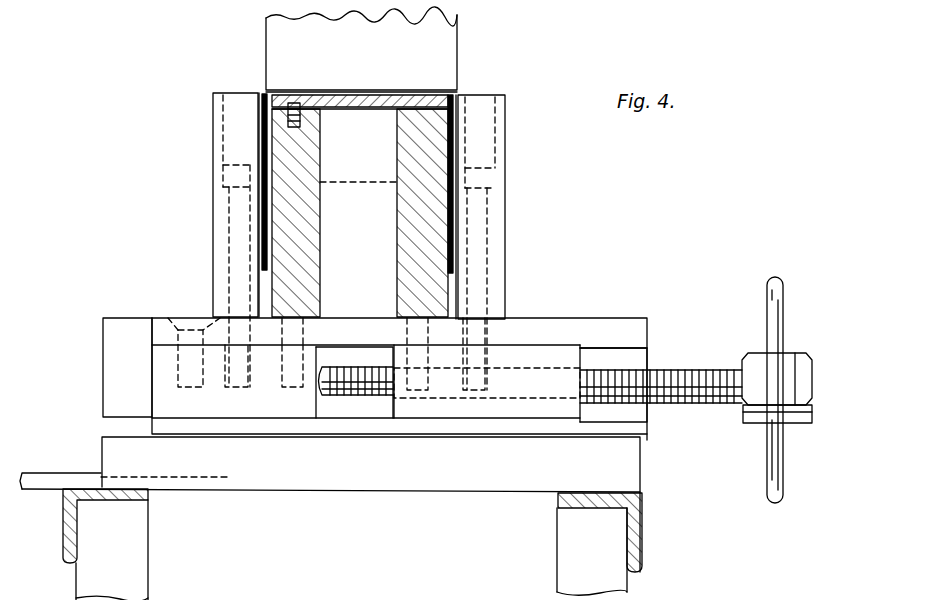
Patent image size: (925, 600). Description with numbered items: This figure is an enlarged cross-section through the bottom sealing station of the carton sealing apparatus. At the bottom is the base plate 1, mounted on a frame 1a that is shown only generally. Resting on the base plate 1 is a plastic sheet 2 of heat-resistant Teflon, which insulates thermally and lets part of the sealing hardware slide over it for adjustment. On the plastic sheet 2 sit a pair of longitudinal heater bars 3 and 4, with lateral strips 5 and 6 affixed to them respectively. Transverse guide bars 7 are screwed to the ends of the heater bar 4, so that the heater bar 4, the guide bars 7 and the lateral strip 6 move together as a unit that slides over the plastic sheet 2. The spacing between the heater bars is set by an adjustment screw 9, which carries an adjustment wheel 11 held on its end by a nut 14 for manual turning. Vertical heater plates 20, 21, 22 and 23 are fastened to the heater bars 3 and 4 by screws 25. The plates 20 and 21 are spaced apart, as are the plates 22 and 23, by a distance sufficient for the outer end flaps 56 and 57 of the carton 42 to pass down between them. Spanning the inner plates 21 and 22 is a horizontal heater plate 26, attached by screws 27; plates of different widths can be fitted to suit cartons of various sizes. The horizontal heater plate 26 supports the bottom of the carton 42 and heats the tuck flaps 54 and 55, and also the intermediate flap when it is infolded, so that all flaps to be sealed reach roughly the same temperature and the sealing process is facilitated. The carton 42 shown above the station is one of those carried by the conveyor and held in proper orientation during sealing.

The base plate 1 is at (393, 470).
The frame 1a is at (645, 519).
The plastic sheet 2 is at (632, 433).
The longitudinal heater bar 3 is at (538, 358).
The longitudinal heater bar 4 is at (165, 378).
The lateral strip 5 is at (638, 360).
The lateral strip 6 is at (112, 383).
The transverse guide bar 7 is at (528, 327).
The adjustment screw 9 is at (685, 380).
The adjustment wheel 11 is at (780, 290).
The nut 14 is at (797, 360).
The vertical heater plate 20 is at (500, 208).
The vertical heater plate 21 is at (397, 263).
The vertical heater plate 22 is at (317, 256).
The vertical heater plate 23 is at (225, 215).
The screws 25 is at (222, 173).
The horizontal heater plate 26 is at (352, 106).
The screws 27 is at (300, 124).
The carton 42 is at (376, 56).
The tuck flap 54 is at (420, 90).
The tuck flap 55 is at (320, 595).
The outer end flap 56 is at (450, 249).
The outer end flap 57 is at (265, 243).